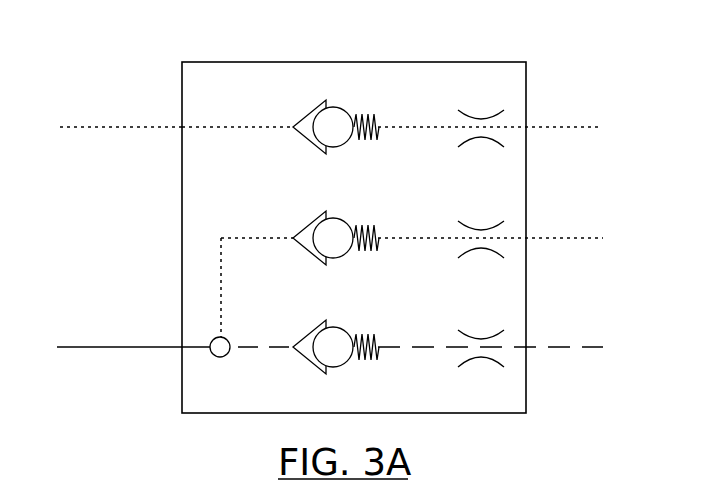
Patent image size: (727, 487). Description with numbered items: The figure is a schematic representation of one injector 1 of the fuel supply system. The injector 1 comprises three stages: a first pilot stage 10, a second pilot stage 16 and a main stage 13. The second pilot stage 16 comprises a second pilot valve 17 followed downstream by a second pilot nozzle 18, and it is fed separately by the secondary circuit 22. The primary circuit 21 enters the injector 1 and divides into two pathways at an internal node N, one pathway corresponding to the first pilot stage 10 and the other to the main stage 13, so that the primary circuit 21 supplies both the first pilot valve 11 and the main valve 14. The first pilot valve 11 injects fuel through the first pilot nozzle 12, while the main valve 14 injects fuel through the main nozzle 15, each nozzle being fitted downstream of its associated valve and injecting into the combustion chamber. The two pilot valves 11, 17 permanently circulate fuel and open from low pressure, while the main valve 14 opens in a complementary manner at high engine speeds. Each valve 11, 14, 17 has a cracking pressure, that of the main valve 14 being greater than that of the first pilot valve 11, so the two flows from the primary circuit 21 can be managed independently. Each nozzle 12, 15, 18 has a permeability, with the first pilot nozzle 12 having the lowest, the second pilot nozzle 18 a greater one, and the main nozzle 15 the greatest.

The injector 1 is at (146, 66).
The secondary circuit 22 is at (82, 129).
The primary circuit 21 is at (82, 349).
The second pilot stage 16 is at (225, 125).
The first pilot stage 10 is at (232, 237).
The main stage 13 is at (268, 349).
The internal node N is at (218, 357).
The second pilot valve 17 is at (345, 106).
The first pilot valve 11 is at (345, 217).
The main valve 14 is at (345, 326).
The second pilot nozzle 18 is at (487, 113).
The first pilot nozzle 12 is at (487, 228).
The main nozzle 15 is at (487, 335).